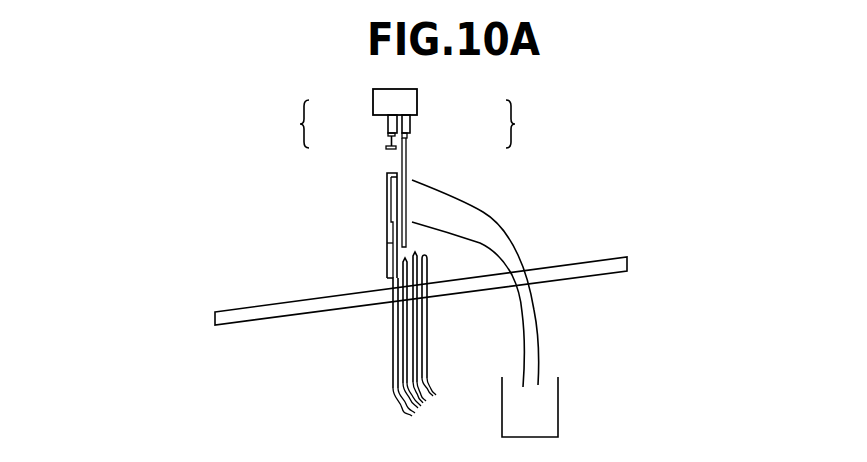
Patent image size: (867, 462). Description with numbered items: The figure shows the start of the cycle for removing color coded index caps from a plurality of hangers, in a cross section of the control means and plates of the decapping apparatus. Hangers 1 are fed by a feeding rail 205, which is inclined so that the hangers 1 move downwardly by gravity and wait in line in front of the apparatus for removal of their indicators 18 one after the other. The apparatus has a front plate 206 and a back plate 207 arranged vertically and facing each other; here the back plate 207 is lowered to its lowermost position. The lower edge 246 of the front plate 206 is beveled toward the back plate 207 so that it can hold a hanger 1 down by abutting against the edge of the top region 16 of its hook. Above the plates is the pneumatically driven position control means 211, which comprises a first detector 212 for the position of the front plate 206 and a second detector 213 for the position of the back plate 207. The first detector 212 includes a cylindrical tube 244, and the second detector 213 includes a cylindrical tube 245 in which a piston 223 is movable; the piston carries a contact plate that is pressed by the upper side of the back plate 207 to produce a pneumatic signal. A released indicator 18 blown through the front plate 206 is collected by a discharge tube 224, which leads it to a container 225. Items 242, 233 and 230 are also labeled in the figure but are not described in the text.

The position control means 211 is at (418, 91).
The second detector 213 is at (284, 124).
The first detector 212 is at (532, 124).
The cylindrical tube 244 is at (386, 127).
The pin 242 is at (386, 143).
The cylindrical tube 245 is at (410, 124).
The piston 223 is at (408, 140).
The front plate 206 is at (407, 160).
The sleeve 233 is at (388, 178).
The back plate 207 is at (392, 203).
The guide 230 is at (395, 232).
The lower edge 246 is at (388, 262).
The discharge tube 224 is at (486, 213).
The container 225 is at (502, 421).
The feeding rail 205 is at (307, 315).
The indicator 18 is at (417, 262).
The top region 16 is at (431, 267).
The hanger 1 is at (414, 400).